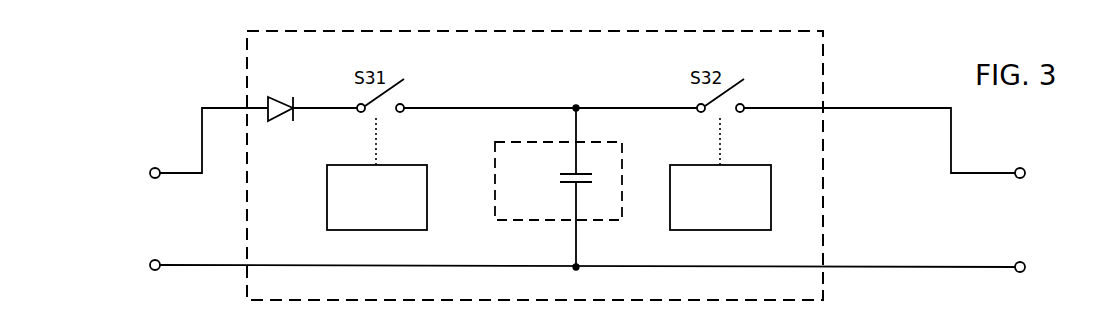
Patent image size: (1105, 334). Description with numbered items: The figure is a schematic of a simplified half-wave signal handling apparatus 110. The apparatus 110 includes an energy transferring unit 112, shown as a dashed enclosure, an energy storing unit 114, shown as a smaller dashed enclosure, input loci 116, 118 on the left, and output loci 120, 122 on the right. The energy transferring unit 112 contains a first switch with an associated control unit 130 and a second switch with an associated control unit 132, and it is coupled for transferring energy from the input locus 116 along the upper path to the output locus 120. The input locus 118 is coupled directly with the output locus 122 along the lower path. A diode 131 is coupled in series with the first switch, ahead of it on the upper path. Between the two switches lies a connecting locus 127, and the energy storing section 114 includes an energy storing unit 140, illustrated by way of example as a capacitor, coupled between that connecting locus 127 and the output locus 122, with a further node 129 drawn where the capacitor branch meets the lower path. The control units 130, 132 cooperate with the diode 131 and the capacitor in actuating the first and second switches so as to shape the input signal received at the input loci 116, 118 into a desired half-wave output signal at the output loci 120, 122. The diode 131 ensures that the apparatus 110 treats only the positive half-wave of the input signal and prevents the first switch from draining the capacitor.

The signal handling apparatus 110 is at (1066, 136).
The energy transferring unit 112 is at (823, 284).
The energy storing unit 114 is at (610, 221).
The input locus 116 is at (155, 167).
The input locus 118 is at (161, 262).
The output locus 120 is at (1021, 179).
The output locus 122 is at (1025, 263).
The connecting locus 127 is at (576, 105).
The return node 129 is at (578, 269).
The control unit 130 is at (327, 201).
The diode 131 is at (278, 120).
The control unit 132 is at (702, 163).
The energy storing unit 140 is at (570, 184).